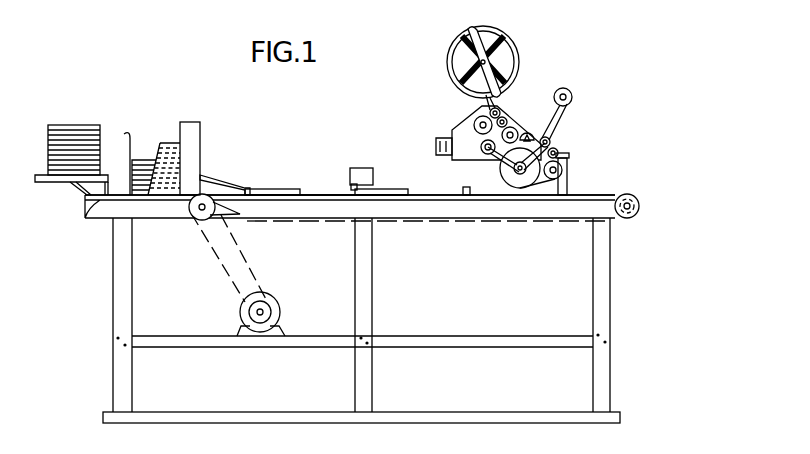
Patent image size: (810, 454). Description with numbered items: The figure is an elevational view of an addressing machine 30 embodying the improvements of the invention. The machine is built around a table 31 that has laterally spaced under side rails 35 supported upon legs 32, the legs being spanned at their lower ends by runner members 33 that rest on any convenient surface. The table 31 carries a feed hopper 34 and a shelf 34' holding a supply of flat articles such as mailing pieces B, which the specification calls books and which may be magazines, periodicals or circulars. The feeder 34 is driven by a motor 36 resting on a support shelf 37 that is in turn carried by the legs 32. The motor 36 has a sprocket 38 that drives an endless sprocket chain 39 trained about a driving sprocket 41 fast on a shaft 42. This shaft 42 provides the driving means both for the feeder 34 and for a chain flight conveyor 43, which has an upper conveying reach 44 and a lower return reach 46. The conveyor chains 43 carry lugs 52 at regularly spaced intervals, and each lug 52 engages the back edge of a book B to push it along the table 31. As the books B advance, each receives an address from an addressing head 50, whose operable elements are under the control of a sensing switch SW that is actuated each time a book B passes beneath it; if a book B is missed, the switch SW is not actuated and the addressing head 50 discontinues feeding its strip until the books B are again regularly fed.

The addressing machine 30 is at (659, 302).
The table 31 is at (100, 197).
The legs 32 is at (127, 323).
The runner members 33 is at (217, 418).
The feed hopper 34 is at (211, 158).
The shelf 34' is at (63, 197).
The under side rails 35 is at (397, 218).
The motor 36 is at (280, 308).
The support shelf 37 is at (443, 340).
The sprocket 38 is at (262, 302).
The endless sprocket chain 39 is at (223, 267).
The driving sprocket 41 is at (192, 219).
The shaft 42 is at (243, 216).
The chain flight conveyor 43 is at (617, 222).
The upper conveying reach 44 is at (308, 190).
The lower return reach 46 is at (305, 221).
The addressing head 50 is at (541, 84).
The lugs 52 is at (247, 187).
The sensing switch SW is at (373, 167).
The mailing pieces (books) B is at (88, 132).